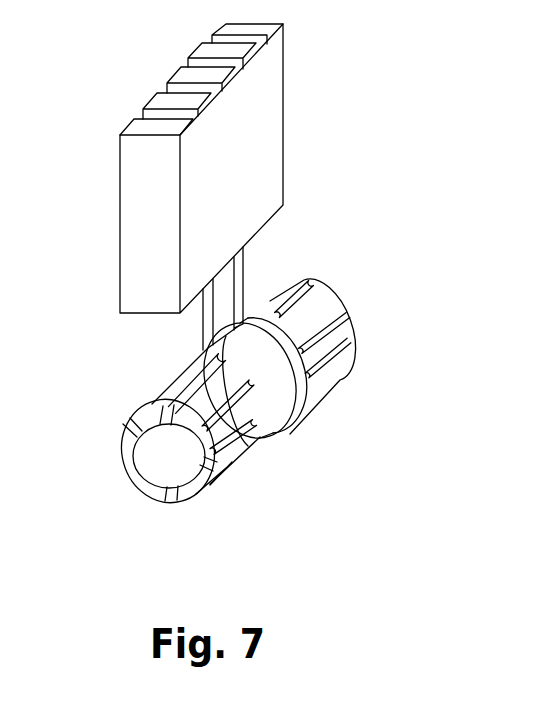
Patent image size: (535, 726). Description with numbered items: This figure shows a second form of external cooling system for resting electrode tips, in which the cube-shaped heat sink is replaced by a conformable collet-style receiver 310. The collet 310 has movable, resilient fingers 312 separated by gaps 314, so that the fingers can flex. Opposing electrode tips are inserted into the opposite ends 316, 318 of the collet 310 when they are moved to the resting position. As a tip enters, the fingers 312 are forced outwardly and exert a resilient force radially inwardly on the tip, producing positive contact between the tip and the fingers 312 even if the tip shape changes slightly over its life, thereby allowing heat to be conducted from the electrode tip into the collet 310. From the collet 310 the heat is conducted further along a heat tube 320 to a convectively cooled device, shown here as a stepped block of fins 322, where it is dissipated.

The collet-style receiver 310 is at (244, 368).
The fingers 312 is at (345, 327).
The gaps 314 is at (315, 290).
The end of collet 316 is at (170, 453).
The end of collet 318 is at (343, 300).
The heat tube 320 is at (243, 270).
The fins 322 is at (273, 102).